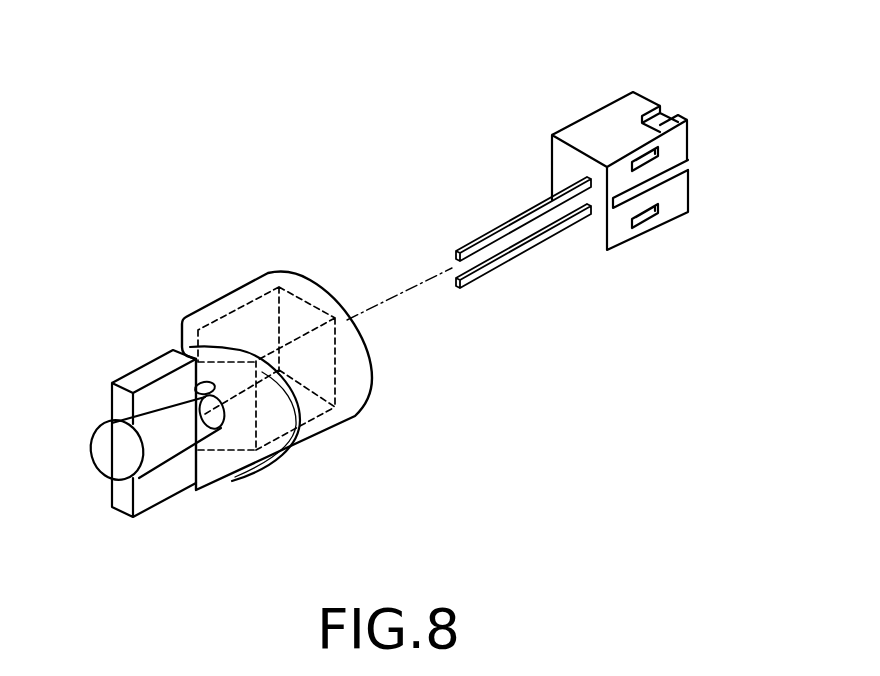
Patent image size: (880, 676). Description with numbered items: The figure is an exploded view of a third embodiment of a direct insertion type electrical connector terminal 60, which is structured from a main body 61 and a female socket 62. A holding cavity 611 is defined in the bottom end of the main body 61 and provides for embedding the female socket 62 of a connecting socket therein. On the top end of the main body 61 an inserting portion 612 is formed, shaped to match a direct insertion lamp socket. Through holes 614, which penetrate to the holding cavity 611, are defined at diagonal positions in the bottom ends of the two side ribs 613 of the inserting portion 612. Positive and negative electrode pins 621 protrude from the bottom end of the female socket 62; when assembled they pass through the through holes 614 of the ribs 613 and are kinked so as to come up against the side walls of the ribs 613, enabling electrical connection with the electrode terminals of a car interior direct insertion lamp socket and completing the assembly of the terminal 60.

The direct insertion electrical connector terminal 60 is at (583, 427).
The main body 61 is at (243, 302).
The holding cavity 611 is at (312, 315).
The inserting portion 612 is at (155, 450).
The ribs 613 is at (133, 378).
The through holes 614 is at (212, 427).
The female socket 62 is at (600, 133).
The positive and negative electrode pins 621 is at (493, 227).